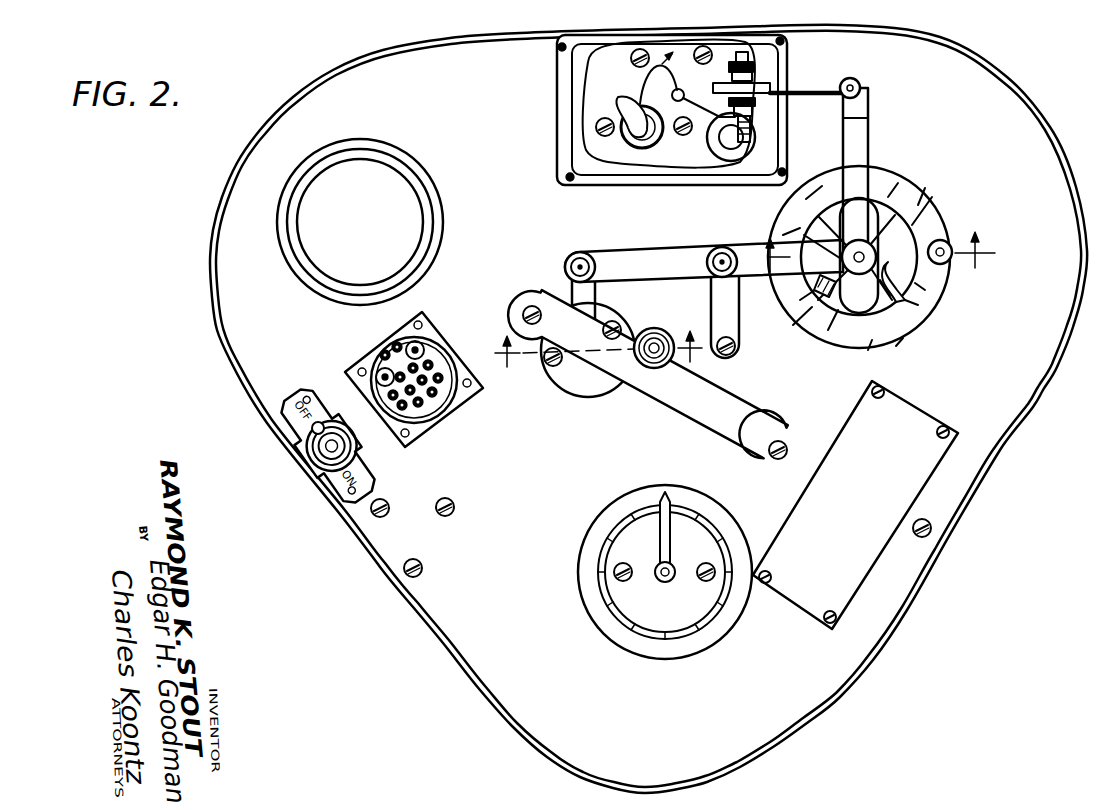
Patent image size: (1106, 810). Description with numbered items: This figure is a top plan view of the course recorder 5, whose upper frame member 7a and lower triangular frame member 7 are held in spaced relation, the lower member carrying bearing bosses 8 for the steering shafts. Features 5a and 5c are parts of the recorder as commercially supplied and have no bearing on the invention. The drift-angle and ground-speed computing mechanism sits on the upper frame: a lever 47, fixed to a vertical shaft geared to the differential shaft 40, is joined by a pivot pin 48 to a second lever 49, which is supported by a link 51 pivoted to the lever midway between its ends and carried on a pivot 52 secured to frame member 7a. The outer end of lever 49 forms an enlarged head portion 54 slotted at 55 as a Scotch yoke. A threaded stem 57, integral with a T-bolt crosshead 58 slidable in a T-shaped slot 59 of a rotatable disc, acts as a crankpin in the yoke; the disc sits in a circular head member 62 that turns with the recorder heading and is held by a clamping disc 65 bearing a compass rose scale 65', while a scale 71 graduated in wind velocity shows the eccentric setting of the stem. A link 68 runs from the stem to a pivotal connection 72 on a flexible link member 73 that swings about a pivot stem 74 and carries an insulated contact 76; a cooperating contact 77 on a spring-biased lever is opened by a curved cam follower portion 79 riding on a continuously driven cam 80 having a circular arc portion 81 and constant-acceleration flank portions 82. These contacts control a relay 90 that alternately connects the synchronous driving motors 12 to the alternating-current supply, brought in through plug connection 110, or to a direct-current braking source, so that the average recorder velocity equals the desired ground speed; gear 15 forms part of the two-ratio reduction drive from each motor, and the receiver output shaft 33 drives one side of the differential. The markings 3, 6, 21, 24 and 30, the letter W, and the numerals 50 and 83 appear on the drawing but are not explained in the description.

The course recorder 5 is at (648, 409).
The commercially supplied recorder feature 5a is at (660, 414).
The commercially supplied recorder feature 5c is at (609, 640).
The lower triangular base or frame member 7 is at (1016, 443).
The upper base or frame member 7a is at (1058, 382).
The bearing bosses 8 is at (872, 265).
The synchronous electric motor 12 is at (837, 208).
The gear 15 is at (805, 228).
The dial sector 21 is at (815, 290).
The dial sector 24 is at (836, 310).
The pointer segment 30 is at (888, 296).
The output or rotor shaft 33 is at (927, 292).
The dial sector 3 is at (913, 224).
The dial sector 6 is at (890, 196).
The shaft 40 is at (654, 340).
The lever 47 is at (595, 302).
The pivot pin 48 is at (588, 258).
The second lever 49 is at (644, 256).
The pivot pin 50 is at (748, 240).
The link 51 is at (712, 296).
The pivot 52 is at (736, 353).
The enlarged head portion 54 is at (878, 226).
The slot 55 is at (872, 347).
The threaded stem 57 is at (866, 255).
The crosshead 58 is at (892, 268).
The T-shaped slot 59 is at (918, 304).
The circular head member 62 is at (905, 340).
The clamping disc 65 is at (941, 285).
The compass rose scale 65' is at (941, 193).
The link 68 is at (860, 158).
The scale 71 is at (800, 318).
The pivotal connection 72 is at (861, 89).
The flexible link member 73 is at (800, 88).
The pivot stem 74 is at (681, 91).
The insulated contact 76 is at (757, 98).
The cooperating contact 77 is at (757, 126).
The cam follower portion 79 is at (642, 82).
The cam 80 is at (640, 146).
The circular arc portion 81 is at (653, 135).
The flank portions 82 is at (619, 93).
The switch housing 83 is at (578, 67).
The relay 90 is at (410, 205).
The plug connection 110 is at (384, 360).
The weight mark W is at (859, 333).